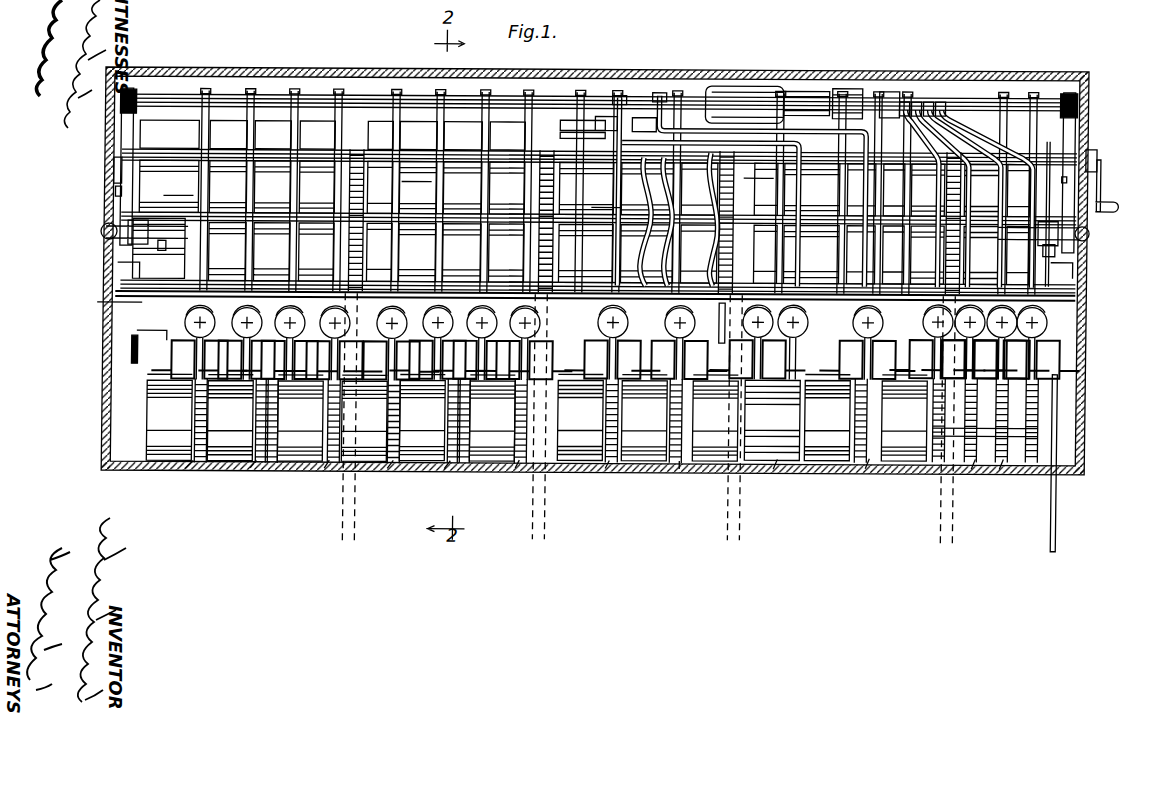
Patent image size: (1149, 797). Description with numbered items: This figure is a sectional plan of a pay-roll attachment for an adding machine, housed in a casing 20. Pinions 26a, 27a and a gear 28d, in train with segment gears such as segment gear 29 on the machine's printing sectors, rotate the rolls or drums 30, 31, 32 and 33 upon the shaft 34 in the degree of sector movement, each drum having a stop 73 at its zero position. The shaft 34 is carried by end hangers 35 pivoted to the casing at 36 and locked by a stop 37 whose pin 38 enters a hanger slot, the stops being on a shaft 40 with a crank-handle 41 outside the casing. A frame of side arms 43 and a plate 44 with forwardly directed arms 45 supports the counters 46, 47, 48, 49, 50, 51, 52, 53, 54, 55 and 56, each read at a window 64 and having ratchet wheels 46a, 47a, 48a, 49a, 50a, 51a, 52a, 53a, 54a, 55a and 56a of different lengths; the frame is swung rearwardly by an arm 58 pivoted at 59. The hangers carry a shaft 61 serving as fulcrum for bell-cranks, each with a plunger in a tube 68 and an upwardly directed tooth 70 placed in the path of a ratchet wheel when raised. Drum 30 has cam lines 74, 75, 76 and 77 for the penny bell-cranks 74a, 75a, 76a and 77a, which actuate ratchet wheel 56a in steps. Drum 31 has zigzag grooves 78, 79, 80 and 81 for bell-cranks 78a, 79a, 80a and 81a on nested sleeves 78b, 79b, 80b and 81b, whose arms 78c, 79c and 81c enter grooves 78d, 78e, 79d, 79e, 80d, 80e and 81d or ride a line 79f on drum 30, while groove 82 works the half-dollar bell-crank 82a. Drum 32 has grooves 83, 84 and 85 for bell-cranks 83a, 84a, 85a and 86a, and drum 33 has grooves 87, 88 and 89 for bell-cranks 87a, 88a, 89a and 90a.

The casing 20 is at (1084, 348).
The pinion 26a is at (954, 146).
The pinion 27a is at (721, 230).
The gear 28d is at (540, 200).
The segment gear 29 is at (350, 193).
The roll or drum 30 is at (884, 223).
The roll or drum 31 is at (693, 250).
The roll or drum 32 is at (460, 193).
The roll or drum 33 is at (267, 192).
The shaft 34 is at (170, 236).
The end hangers 35 is at (110, 224).
The pivot 36 is at (104, 234).
The stop 37 is at (114, 162).
The pin 38 is at (116, 186).
The shaft 40 is at (156, 158).
The crank-handle 41 is at (1098, 185).
The side arms 43 is at (136, 275).
The longitudinally arranged plate 44 is at (106, 303).
The forwardly directed arms 45 is at (166, 338).
The counter 46 is at (169, 417).
The counter 47 is at (230, 418).
The counter 48 is at (300, 418).
The counter 49 is at (364, 418).
The counter 50 is at (422, 417).
The counter 51 is at (492, 418).
The counter 52 is at (580, 417).
The counter 53 is at (644, 418).
The counter 54 is at (715, 418).
The counter 55 is at (827, 418).
The counter 56 is at (904, 418).
The ratchet wheel 46a is at (194, 472).
The ratchet wheel 47a is at (262, 468).
The ratchet wheel 48a is at (334, 469).
The ratchet wheel 49a is at (395, 468).
The ratchet wheel 50a is at (451, 468).
The ratchet wheel 51a is at (522, 468).
The ratchet wheel 52a is at (614, 468).
The ratchet wheel 53a is at (684, 468).
The ratchet wheel 54a is at (782, 466).
The ratchet wheel 55a is at (873, 467).
The ratchet wheel 56a is at (1005, 469).
The arm 58 is at (1060, 495).
The pivot 59 is at (1060, 249).
The shaft 61 is at (158, 104).
The window 64 is at (302, 462).
The tube 68 is at (240, 304).
The tooth 70 is at (198, 370).
The stop 73 is at (190, 206).
The cam line 74 is at (913, 321).
The cam line 75 is at (913, 305).
The cam line 76 is at (891, 305).
The cam line 77 is at (892, 321).
The bell-crank 74a is at (942, 98).
The bell-crank 75a is at (930, 98).
The bell-crank 76a is at (918, 98).
The bell-crank 77a is at (906, 100).
The cam groove 78 is at (714, 200).
The bell-crank 78a is at (716, 160).
The sleeve 78b is at (750, 84).
The arm 78c is at (802, 90).
The cam groove 78d is at (819, 186).
The cam groove 78e is at (819, 201).
The cam groove 79 is at (730, 282).
The bell-crank 79a is at (642, 129).
The sleeve 79b is at (724, 84).
The arm 79c is at (843, 134).
The cam groove 79d is at (819, 233).
The cam groove 79e is at (816, 299).
The line 79f is at (843, 149).
The cam groove 80 is at (627, 239).
The bell-crank 80a is at (604, 190).
The sleeve 80b is at (692, 84).
The cam groove 80d is at (808, 314).
The cam groove 80e is at (840, 323).
The cam groove 81 is at (566, 179).
The bell-crank 81a is at (606, 134).
The sleeve 81b is at (636, 108).
The arm 81c is at (895, 130).
The cam groove 81d is at (894, 146).
The cam groove 82 is at (592, 200).
The bell-crank 82a is at (586, 118).
The cam groove 83 is at (520, 242).
The bell-crank 83a is at (528, 122).
The cam groove 84 is at (474, 256).
The bell-crank 84a is at (482, 122).
The cam groove 85 is at (437, 205).
The bell-crank 85a is at (438, 122).
The bell-crank 86a is at (395, 122).
The cam groove 87 is at (330, 240).
The bell-crank 87a is at (335, 122).
The cam groove 88 is at (286, 260).
The bell-crank 88a is at (292, 122).
The cam groove 89 is at (219, 236).
The bell-crank 89a is at (247, 122).
The bell-crank 90a is at (202, 122).